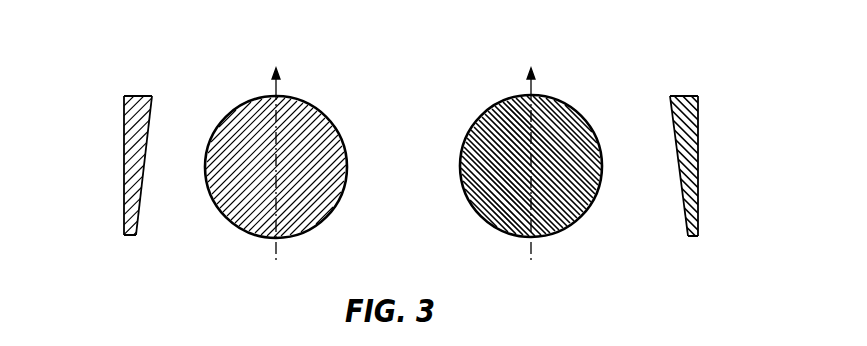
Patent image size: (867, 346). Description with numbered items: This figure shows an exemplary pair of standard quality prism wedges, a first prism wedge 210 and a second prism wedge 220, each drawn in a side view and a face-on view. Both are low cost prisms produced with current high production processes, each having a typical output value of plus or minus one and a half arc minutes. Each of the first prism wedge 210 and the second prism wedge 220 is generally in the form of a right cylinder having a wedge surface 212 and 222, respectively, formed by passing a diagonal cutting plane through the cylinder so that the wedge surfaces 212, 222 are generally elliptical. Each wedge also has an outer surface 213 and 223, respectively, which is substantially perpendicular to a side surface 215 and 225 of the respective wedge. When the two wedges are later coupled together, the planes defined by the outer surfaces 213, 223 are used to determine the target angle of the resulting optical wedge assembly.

The first prism wedge 210 is at (141, 96).
The wedge surface 212 is at (147, 210).
The outer surface 213 is at (117, 172).
The side surface 215 is at (352, 196).
The second prism wedge 220 is at (491, 105).
The wedge surface 222 is at (679, 224).
The outer surface 223 is at (708, 178).
The side surface 225 is at (487, 234).